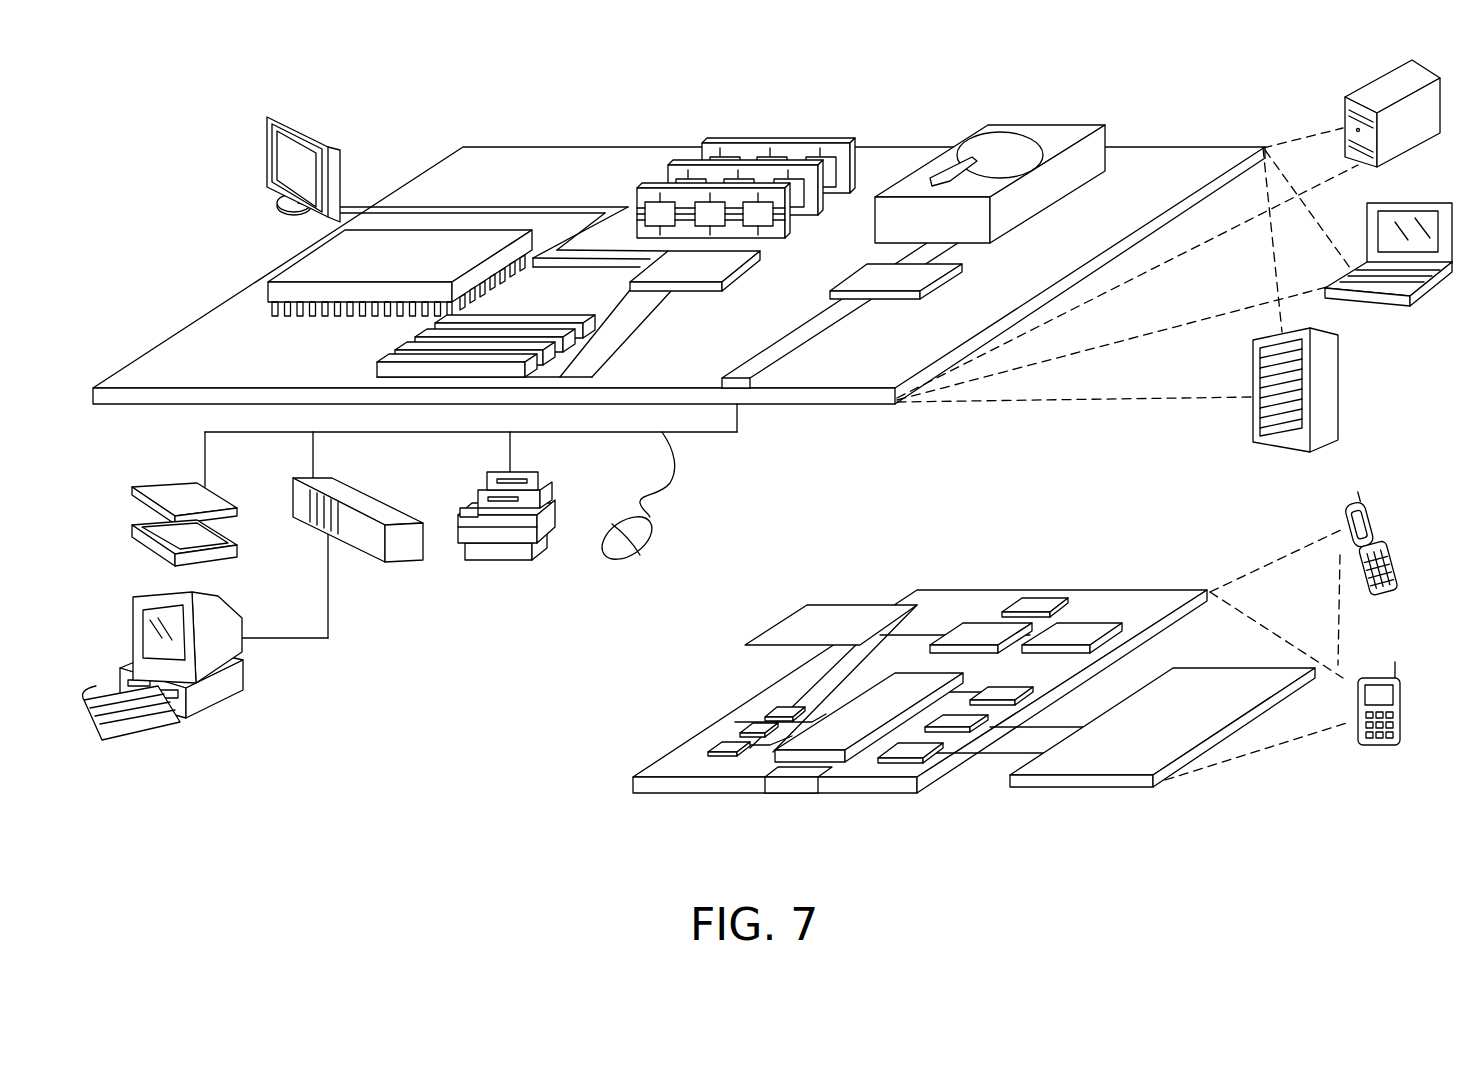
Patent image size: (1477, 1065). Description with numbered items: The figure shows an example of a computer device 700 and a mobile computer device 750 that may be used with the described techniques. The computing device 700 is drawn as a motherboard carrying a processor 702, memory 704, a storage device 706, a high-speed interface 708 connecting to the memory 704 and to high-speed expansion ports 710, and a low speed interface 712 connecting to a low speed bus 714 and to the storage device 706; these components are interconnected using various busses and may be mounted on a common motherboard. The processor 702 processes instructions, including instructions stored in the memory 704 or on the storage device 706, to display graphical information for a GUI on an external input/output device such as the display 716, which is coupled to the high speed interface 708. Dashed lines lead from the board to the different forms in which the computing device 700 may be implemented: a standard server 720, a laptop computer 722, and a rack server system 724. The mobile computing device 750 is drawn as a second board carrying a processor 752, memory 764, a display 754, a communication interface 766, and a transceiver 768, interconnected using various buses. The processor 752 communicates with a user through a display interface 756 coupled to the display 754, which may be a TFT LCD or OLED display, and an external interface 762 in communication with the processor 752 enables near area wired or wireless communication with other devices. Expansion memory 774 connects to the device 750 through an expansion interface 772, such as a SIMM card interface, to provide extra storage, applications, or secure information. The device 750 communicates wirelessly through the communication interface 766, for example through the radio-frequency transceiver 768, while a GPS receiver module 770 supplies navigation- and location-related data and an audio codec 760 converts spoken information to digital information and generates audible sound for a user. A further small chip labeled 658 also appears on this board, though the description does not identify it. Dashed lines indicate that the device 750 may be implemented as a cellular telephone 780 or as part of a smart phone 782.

The computing device 700 is at (408, 88).
The processor 702 is at (298, 262).
The memory 704 is at (778, 145).
The storage device 706 is at (1030, 125).
The high-speed interface 708 is at (713, 270).
The high-speed expansion ports 710 is at (405, 343).
The low speed interface 712 is at (865, 276).
The low speed bus 714 is at (745, 373).
The display 716 is at (268, 115).
The standard server 720 is at (1370, 92).
The laptop computer 722 is at (1428, 200).
The rack server system 724 is at (1340, 392).
The mobile computer device 750 is at (580, 806).
The processor 752 is at (838, 725).
The display 754 is at (1204, 688).
The display interface 756 is at (920, 758).
The audio codec 760 is at (1005, 690).
The external interface 762 is at (793, 770).
The memory 764 is at (755, 735).
The communication interface 766 is at (980, 625).
The transceiver 768 is at (1080, 625).
The GPS receiver module 770 is at (1037, 600).
The expansion interface 772 is at (897, 605).
The expansion memory 774 is at (807, 605).
The chip 658 is at (970, 723).
The cellular telephone 780 is at (1360, 505).
The smart phone 782 is at (1375, 665).